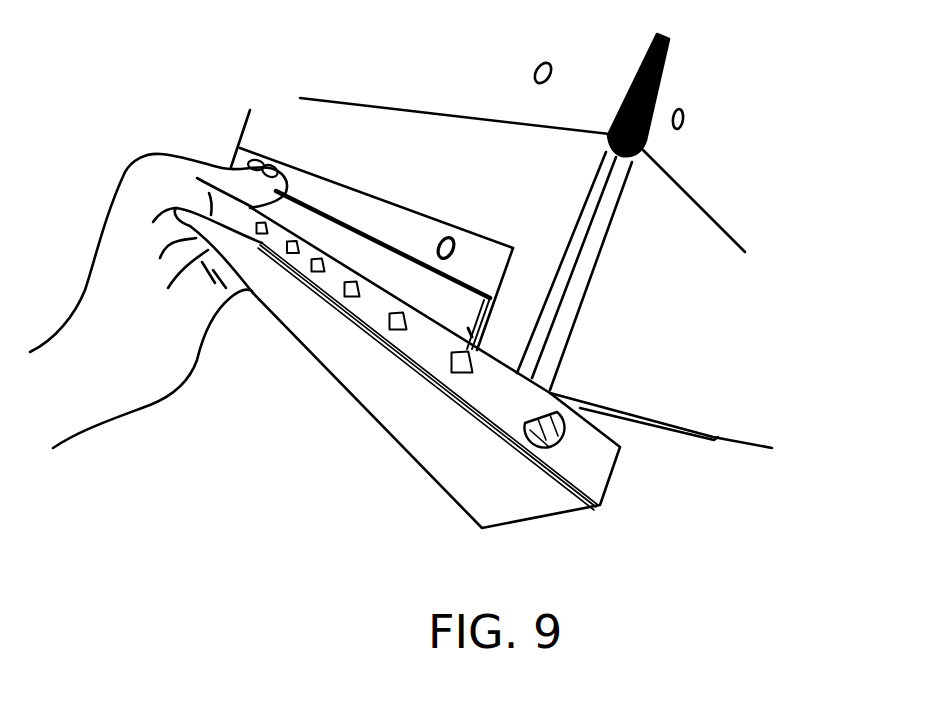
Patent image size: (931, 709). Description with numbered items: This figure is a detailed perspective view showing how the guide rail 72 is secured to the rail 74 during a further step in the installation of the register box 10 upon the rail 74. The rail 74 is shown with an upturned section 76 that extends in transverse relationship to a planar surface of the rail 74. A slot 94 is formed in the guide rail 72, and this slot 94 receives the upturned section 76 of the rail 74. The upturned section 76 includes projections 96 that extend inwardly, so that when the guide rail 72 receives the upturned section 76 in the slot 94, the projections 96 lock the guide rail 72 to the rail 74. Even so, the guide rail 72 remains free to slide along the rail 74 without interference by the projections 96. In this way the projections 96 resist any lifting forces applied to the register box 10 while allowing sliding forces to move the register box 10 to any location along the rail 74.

The register box 10 is at (723, 407).
The guide rail 72 is at (393, 218).
The rail 74 is at (424, 447).
The upturned section 76 is at (604, 460).
The slot 94 is at (487, 323).
The projections 96 is at (560, 419).